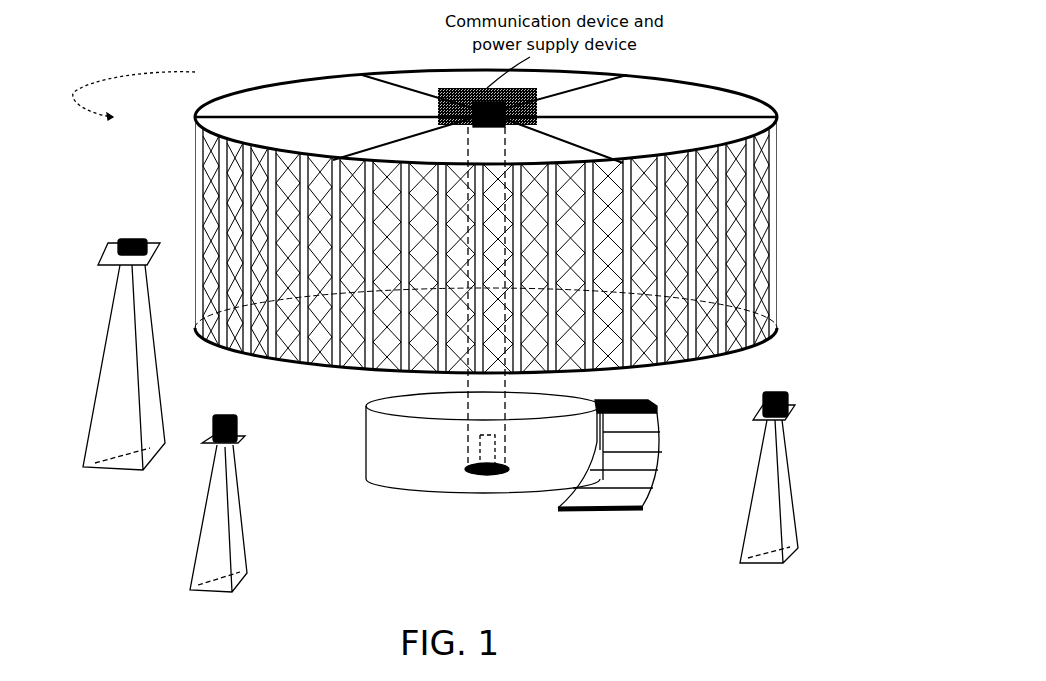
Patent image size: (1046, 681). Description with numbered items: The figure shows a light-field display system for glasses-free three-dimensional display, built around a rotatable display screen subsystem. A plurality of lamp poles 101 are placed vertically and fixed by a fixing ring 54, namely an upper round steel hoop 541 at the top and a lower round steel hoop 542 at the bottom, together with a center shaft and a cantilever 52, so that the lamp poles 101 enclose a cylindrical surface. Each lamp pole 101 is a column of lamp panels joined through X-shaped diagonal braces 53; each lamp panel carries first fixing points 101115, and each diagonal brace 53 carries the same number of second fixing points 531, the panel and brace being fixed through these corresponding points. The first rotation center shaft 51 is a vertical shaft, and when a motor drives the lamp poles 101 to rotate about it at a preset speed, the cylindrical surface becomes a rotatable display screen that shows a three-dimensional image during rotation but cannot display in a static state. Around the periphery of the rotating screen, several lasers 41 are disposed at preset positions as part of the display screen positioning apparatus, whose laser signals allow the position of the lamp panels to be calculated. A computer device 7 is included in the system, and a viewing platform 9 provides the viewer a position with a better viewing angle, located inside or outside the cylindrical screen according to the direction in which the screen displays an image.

The computer device 7 is at (480, 478).
The viewing platform 9 is at (372, 405).
The lasers 41 is at (107, 267).
The first rotation center shaft 51 is at (487, 153).
The cantilever 52 is at (386, 78).
The diagonal brace 53 is at (519, 269).
The fixing ring 54 is at (533, 212).
The upper round steel hoop 541 is at (742, 66).
The lower round steel hoop 542 is at (773, 342).
The lamp pole 101 is at (780, 147).
The second fixing points 531 is at (768, 263).
The first fixing points 101115 is at (770, 260).